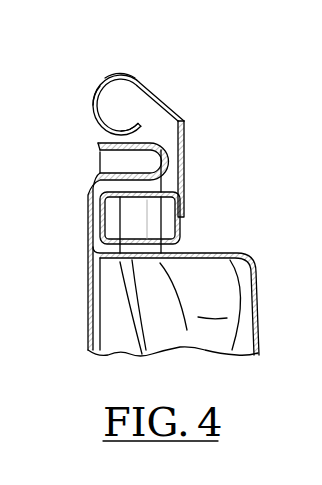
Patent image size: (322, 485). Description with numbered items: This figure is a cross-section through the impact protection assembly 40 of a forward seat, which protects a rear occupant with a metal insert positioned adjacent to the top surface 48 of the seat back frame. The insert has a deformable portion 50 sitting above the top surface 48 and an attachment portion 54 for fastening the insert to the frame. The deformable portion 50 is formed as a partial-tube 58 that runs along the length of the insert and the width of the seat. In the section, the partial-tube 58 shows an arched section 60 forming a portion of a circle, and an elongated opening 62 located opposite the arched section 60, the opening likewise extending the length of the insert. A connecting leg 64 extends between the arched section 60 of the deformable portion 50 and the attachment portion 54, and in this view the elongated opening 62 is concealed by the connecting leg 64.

The impact protection assembly 40 is at (183, 51).
The top surface 48 is at (125, 133).
The deformable portion 50 is at (127, 74).
The attachment portion 54 is at (99, 224).
The partial-tube 58 is at (118, 74).
The arched section 60 is at (100, 84).
The elongated opening 62 is at (138, 110).
The connecting leg 64 is at (150, 90).